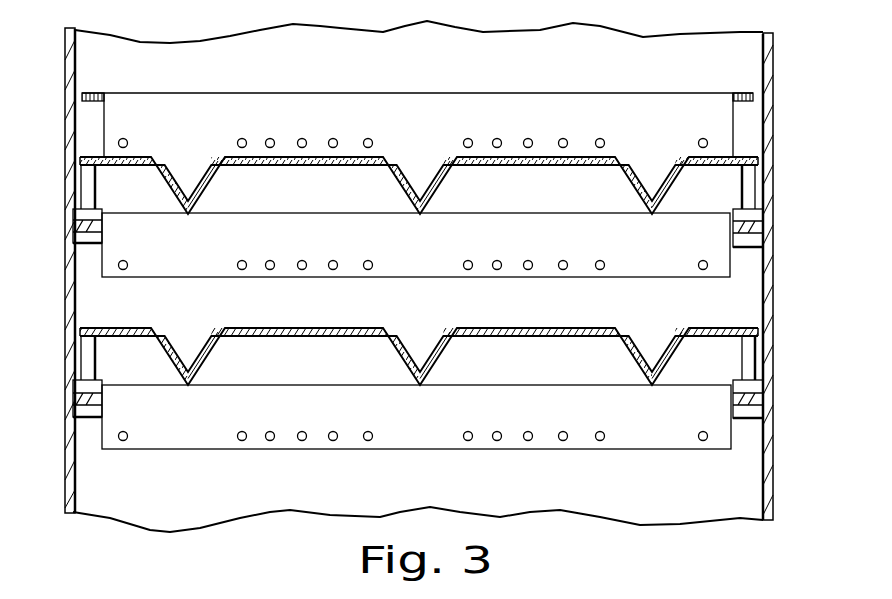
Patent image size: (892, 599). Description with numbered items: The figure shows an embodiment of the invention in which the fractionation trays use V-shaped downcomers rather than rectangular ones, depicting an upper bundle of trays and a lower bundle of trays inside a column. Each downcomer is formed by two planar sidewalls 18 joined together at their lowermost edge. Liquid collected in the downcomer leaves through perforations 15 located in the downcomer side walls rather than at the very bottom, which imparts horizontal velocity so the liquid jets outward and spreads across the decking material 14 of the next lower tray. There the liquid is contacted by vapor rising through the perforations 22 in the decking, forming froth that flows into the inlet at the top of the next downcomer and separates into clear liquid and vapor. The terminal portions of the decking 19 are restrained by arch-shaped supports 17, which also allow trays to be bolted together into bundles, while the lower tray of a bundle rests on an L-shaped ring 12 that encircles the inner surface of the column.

The L-shaped ring 12 is at (770, 233).
The decking material 14 is at (702, 325).
The perforations in the downcomer side walls 15 is at (367, 432).
The arch-shaped support 17 is at (757, 352).
The planar sidewalls 18 is at (403, 140).
The terminal portions of the decking 19 is at (115, 328).
The perforations in the decking 22 is at (497, 337).